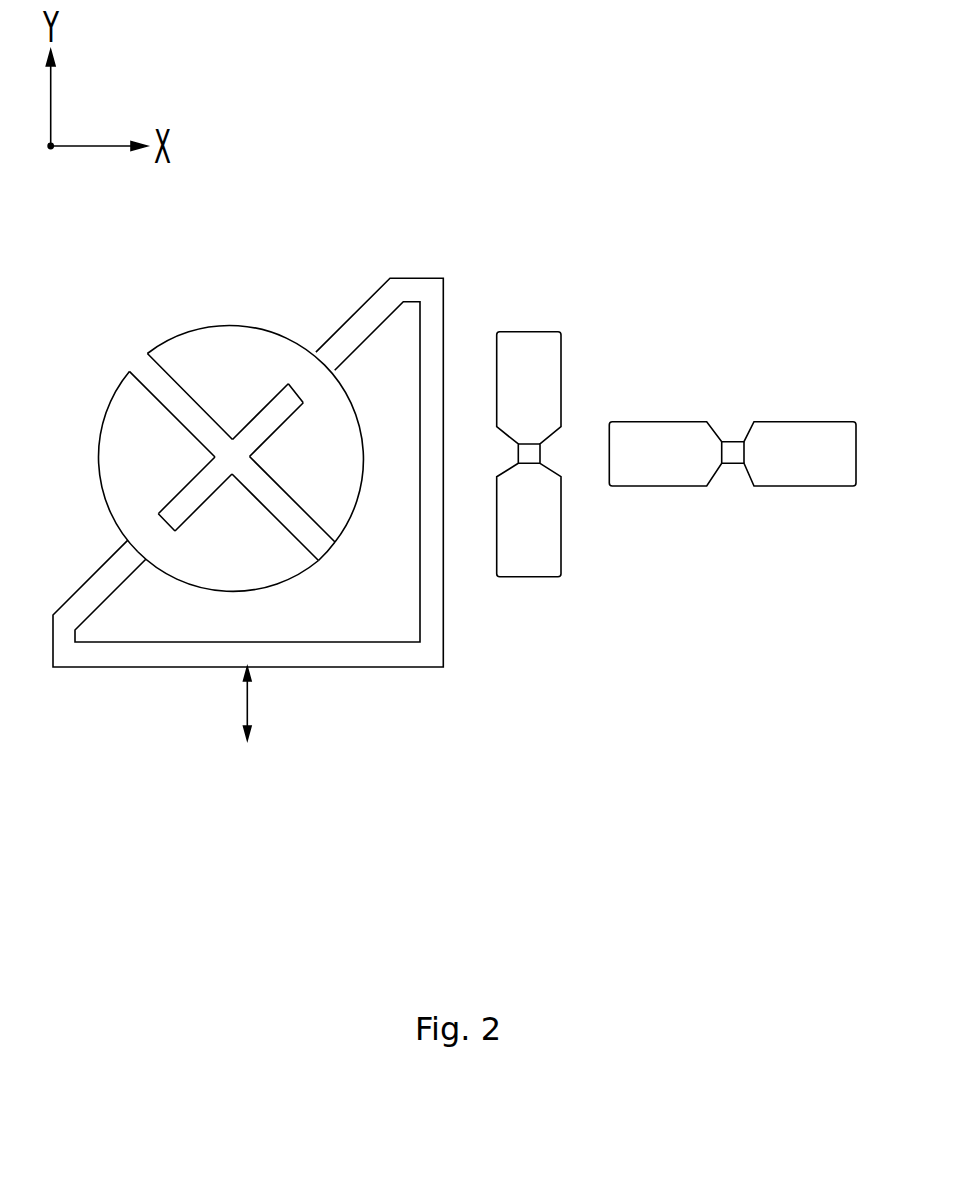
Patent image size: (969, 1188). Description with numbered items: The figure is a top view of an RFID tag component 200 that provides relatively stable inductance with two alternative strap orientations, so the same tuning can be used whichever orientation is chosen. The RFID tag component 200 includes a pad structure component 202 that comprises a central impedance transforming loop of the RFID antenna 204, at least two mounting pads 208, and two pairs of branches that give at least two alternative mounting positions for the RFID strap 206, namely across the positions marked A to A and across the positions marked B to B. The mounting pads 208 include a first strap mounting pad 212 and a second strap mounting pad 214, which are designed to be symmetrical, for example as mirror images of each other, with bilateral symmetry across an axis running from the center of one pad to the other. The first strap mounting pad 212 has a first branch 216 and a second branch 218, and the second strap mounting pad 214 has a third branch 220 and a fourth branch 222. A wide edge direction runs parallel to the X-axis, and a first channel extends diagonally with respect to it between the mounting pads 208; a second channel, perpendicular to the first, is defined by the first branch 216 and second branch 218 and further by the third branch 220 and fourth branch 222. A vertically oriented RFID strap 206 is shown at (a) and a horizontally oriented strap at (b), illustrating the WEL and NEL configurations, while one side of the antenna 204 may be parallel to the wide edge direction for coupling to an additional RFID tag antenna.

The RFID tag component 200 is at (379, 208).
The pad structure component 202 is at (130, 638).
The RFID antenna 204 is at (427, 655).
The RFID strap 206 is at (525, 344).
The mounting pads 208 is at (240, 352).
The first strap mounting pad 212 is at (308, 350).
The second strap mounting pad 214 is at (122, 515).
The first branch 216 is at (171, 338).
The second branch 218 is at (337, 528).
The third branch 220 is at (110, 467).
The fourth branch 222 is at (225, 583).